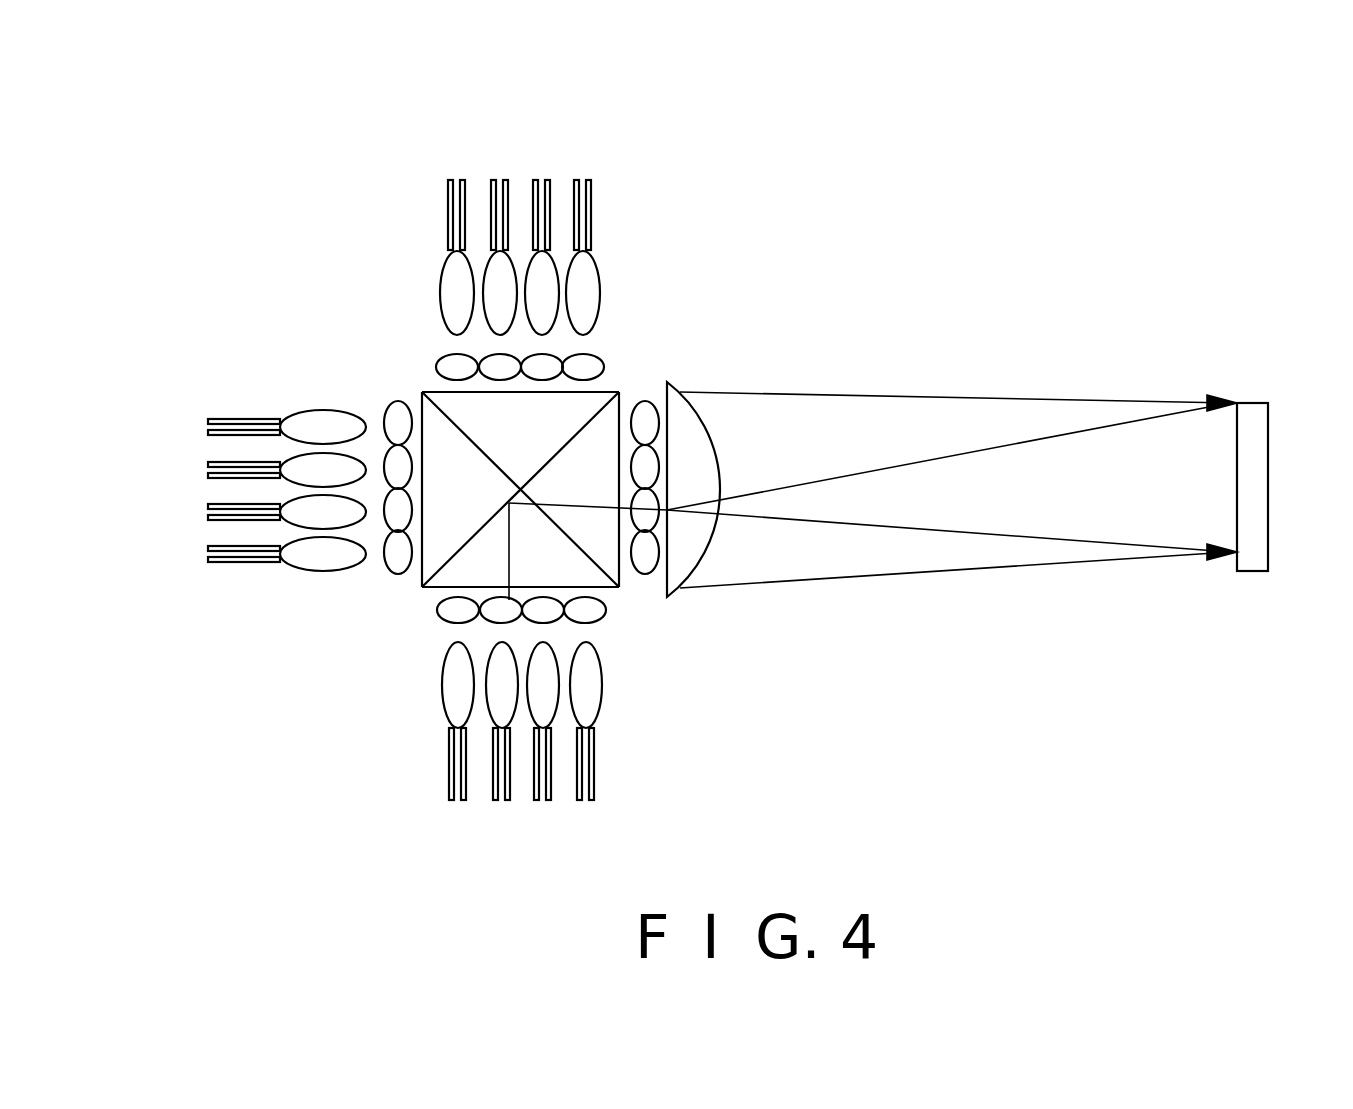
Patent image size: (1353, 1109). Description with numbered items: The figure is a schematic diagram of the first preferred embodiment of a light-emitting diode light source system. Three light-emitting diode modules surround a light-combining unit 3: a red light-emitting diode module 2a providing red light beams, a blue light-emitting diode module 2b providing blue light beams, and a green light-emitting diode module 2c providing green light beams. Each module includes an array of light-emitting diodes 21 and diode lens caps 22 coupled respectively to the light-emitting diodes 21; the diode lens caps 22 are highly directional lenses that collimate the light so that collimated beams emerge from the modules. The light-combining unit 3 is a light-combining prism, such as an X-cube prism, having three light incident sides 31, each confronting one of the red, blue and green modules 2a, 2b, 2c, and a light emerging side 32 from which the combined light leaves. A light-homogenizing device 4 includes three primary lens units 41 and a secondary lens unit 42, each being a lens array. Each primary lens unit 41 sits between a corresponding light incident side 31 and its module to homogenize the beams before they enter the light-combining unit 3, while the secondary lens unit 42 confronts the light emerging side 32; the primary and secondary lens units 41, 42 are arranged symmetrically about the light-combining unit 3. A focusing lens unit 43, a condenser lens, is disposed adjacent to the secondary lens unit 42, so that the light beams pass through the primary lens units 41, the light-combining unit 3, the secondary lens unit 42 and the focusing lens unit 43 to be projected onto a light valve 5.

The red light-emitting diode module 2a is at (484, 150).
The blue light-emitting diode module 2b is at (180, 462).
The green light-emitting diode module 2c is at (495, 822).
The light-emitting diodes 21 is at (450, 223).
The diode lens caps 22 is at (455, 297).
The light-combining unit 3 is at (418, 388).
The light incident sides 31 is at (418, 399).
The light emerging side 32 is at (630, 395).
The light-homogenizing device 4 is at (620, 318).
The primary lens units 41 is at (600, 360).
The secondary lens unit 42 is at (636, 574).
The focusing lens unit 43 is at (692, 555).
The light valve 5 is at (1252, 425).